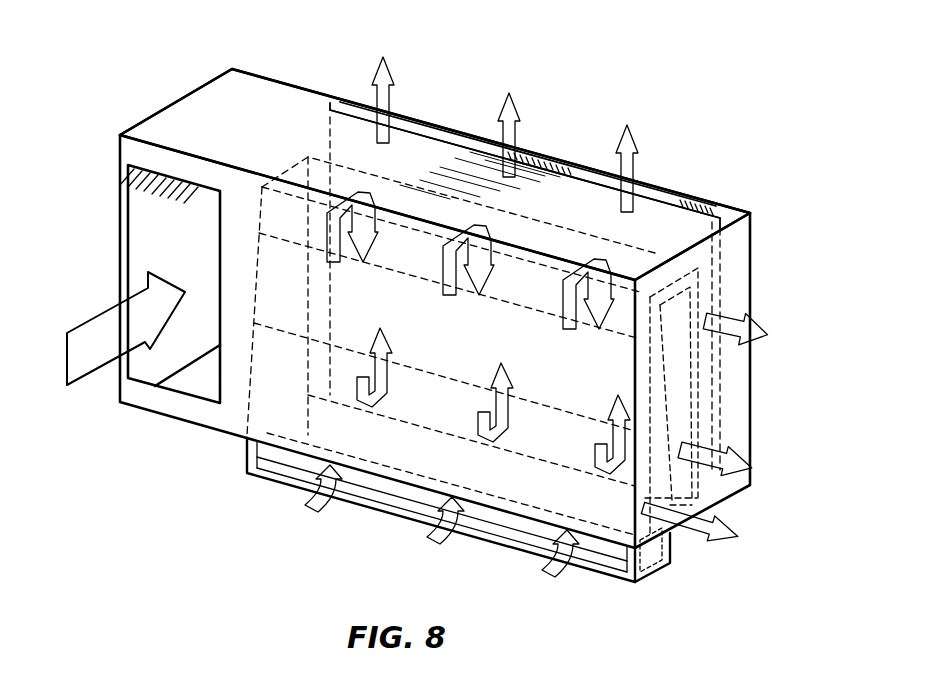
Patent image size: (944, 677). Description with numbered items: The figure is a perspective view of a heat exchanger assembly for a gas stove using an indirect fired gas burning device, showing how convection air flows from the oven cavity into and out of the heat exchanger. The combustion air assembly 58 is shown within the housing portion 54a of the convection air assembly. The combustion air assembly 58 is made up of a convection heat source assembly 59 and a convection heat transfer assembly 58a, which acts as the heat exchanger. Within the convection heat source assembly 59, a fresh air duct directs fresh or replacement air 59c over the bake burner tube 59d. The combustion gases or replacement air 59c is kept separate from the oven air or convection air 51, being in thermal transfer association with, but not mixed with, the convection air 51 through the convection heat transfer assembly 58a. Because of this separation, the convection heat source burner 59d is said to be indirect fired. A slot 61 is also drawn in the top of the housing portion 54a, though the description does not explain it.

The convection air 51 is at (73, 387).
The housing portion 54a is at (287, 112).
The combustion air assembly 58 is at (727, 289).
The convection heat transfer assembly 58a is at (670, 380).
The convection heat source assembly 59 is at (660, 579).
The replacement air 59c is at (640, 147).
The bake burner tube 59d is at (253, 474).
The top slot 61 is at (420, 136).